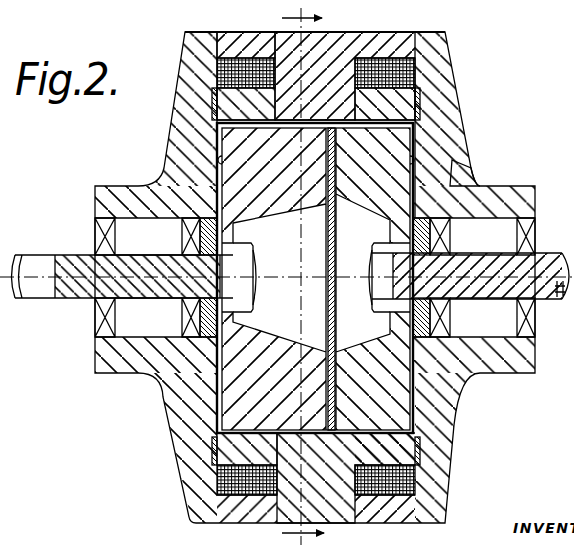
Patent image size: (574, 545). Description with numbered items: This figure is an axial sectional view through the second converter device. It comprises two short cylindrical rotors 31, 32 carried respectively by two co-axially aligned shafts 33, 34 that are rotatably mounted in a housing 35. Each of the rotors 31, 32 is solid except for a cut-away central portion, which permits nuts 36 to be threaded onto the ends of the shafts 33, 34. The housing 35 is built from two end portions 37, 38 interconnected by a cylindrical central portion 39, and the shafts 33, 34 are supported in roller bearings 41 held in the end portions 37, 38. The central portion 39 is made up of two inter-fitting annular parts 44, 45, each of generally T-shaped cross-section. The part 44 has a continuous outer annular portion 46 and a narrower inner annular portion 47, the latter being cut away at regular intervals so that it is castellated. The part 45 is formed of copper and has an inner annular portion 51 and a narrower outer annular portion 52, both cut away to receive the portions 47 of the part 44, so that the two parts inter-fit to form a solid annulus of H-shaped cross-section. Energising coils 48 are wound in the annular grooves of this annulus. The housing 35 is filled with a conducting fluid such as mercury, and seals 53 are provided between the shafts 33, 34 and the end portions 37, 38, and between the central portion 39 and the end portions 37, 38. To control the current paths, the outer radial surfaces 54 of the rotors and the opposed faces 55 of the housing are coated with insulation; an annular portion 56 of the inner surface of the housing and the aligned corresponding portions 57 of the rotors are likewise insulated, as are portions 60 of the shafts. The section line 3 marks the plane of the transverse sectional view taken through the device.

The section line 3- 3 is at (292, 274).
The rotor 31 is at (243, 400).
The rotor 32 is at (377, 400).
The shaft 33 is at (32, 288).
The shaft 34 is at (559, 299).
The housing 35 is at (452, 62).
The nuts 36 is at (240, 283).
The end portion 37 is at (200, 185).
The end portion 38 is at (414, 198).
The central portion 39 is at (391, 25).
The roller bearings 41 is at (173, 328).
The annular part 44 is at (258, 31).
The annular part 45 is at (232, 452).
The outer annular portion 46 is at (328, 36).
The inner annular portion 47 is at (210, 94).
The energising coils 48 is at (212, 72).
The inner annular portion 51 is at (413, 446).
The outer annular portion 52 is at (340, 485).
The seals 53 is at (208, 113).
The outer radial surfaces 54 is at (205, 143).
The opposed faces 55 is at (160, 186).
The annular portion 56 is at (340, 113).
The portions 57 is at (340, 117).
The portions 60 is at (153, 252).